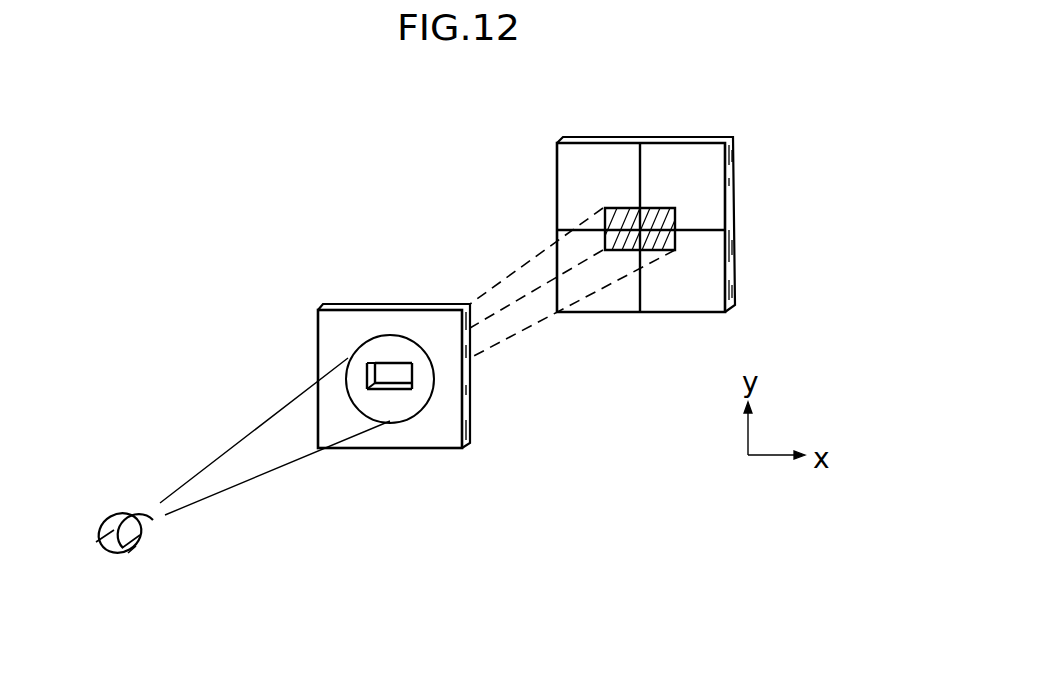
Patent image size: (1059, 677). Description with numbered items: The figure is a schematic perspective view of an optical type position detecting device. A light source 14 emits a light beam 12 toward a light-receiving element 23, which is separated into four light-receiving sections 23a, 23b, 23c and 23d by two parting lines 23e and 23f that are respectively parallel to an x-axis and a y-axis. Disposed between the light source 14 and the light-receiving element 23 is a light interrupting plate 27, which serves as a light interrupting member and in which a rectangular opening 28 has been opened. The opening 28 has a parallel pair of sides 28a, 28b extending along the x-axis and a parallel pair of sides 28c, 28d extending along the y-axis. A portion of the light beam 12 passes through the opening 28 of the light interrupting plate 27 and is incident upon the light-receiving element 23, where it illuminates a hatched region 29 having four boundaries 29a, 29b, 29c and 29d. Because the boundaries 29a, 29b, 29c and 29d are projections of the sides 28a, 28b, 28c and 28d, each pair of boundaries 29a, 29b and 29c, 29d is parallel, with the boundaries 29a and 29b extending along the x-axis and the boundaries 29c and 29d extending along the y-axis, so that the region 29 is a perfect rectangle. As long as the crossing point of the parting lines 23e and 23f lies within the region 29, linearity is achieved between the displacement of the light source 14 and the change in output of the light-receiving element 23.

The light beam 12 is at (224, 452).
The light source 14 is at (118, 513).
The light-receiving element 23 is at (652, 235).
The light-receiving section 23a is at (684, 160).
The light-receiving section 23b is at (592, 160).
The light-receiving section 23c is at (597, 303).
The light-receiving section 23d is at (683, 300).
The parting line 23e is at (705, 228).
The parting line 23f is at (638, 165).
The light interrupting plate 27 is at (328, 302).
The rectangular opening 28 is at (385, 380).
The side of opening 28a is at (382, 363).
The side of opening 28b is at (390, 396).
The side of opening 28c is at (372, 373).
The side of opening 28d is at (412, 374).
The region 29 is at (652, 249).
The boundary 29a is at (608, 208).
The boundary 29b is at (627, 252).
The boundary 29c is at (604, 233).
The boundary 29d is at (680, 217).